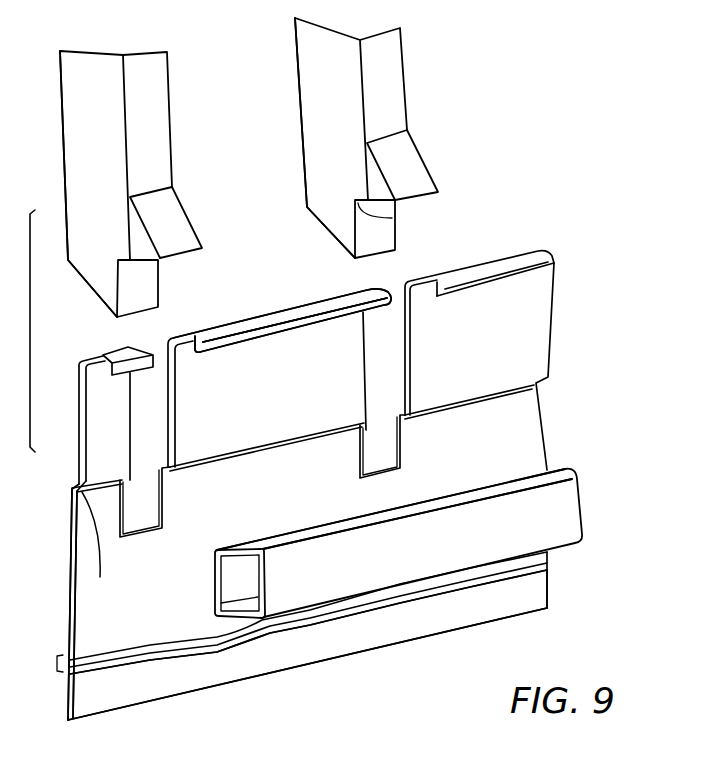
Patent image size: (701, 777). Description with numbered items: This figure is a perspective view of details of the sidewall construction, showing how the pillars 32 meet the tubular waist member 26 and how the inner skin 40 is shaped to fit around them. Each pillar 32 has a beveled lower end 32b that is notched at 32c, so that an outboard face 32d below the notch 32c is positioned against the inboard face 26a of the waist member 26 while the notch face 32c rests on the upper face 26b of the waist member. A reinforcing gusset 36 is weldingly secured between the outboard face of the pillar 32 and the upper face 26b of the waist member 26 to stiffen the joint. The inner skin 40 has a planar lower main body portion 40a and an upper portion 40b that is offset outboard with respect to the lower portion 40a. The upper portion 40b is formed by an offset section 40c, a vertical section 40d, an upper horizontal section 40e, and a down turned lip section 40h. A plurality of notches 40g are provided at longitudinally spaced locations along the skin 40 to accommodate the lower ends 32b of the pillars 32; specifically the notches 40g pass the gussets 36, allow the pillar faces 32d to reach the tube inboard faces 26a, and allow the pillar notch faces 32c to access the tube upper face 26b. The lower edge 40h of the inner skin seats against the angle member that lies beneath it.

The pillar 32 is at (172, 118).
The reinforcing gusset 36 is at (172, 217).
The lower end of pillar 32b is at (80, 278).
The notch 32c is at (380, 217).
The outboard face 32d is at (147, 287).
The inner skin 40 is at (134, 712).
The lower main body portion 40a is at (533, 448).
The upper portion 40b is at (63, 463).
The offset section 40c is at (102, 550).
The vertical section 40d is at (122, 436).
The upper horizontal section 40e is at (293, 306).
The notches 40g is at (138, 527).
The down turned lip section 40h is at (243, 350).
The waist member 26 is at (382, 578).
The inboard face 26a is at (215, 585).
The upper face 26b is at (310, 532).